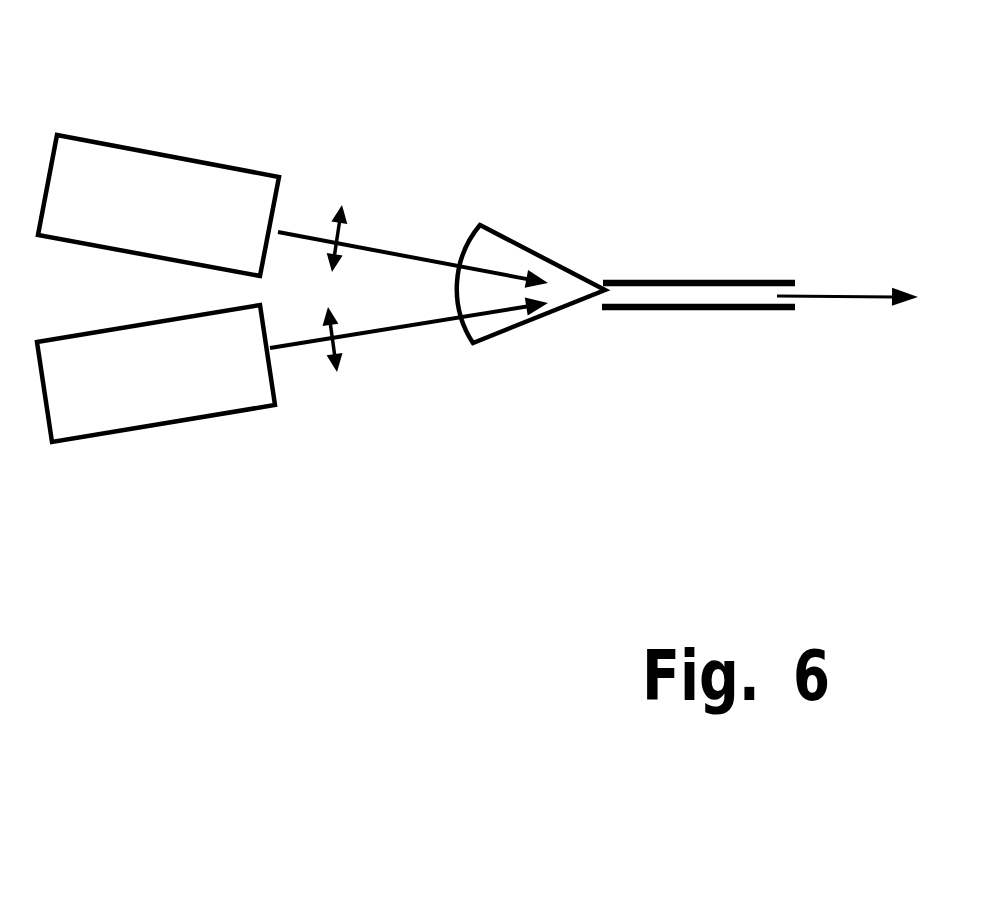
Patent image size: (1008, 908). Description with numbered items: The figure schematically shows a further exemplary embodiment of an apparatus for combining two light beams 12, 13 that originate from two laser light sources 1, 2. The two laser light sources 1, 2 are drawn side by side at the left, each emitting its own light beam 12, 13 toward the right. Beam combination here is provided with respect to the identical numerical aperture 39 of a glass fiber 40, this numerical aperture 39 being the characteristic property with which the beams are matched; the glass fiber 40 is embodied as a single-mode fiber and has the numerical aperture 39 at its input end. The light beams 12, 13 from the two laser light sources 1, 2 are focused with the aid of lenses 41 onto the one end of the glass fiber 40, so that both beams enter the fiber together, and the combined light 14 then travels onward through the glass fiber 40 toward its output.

The laser light source 1 is at (163, 223).
The laser light source 2 is at (167, 393).
The light beam 12 is at (428, 258).
The light beam 13 is at (450, 322).
The numerical aperture 39 is at (515, 253).
The glass fiber 40 is at (698, 310).
The output light 14 is at (863, 300).
The lenses 41 is at (342, 205).